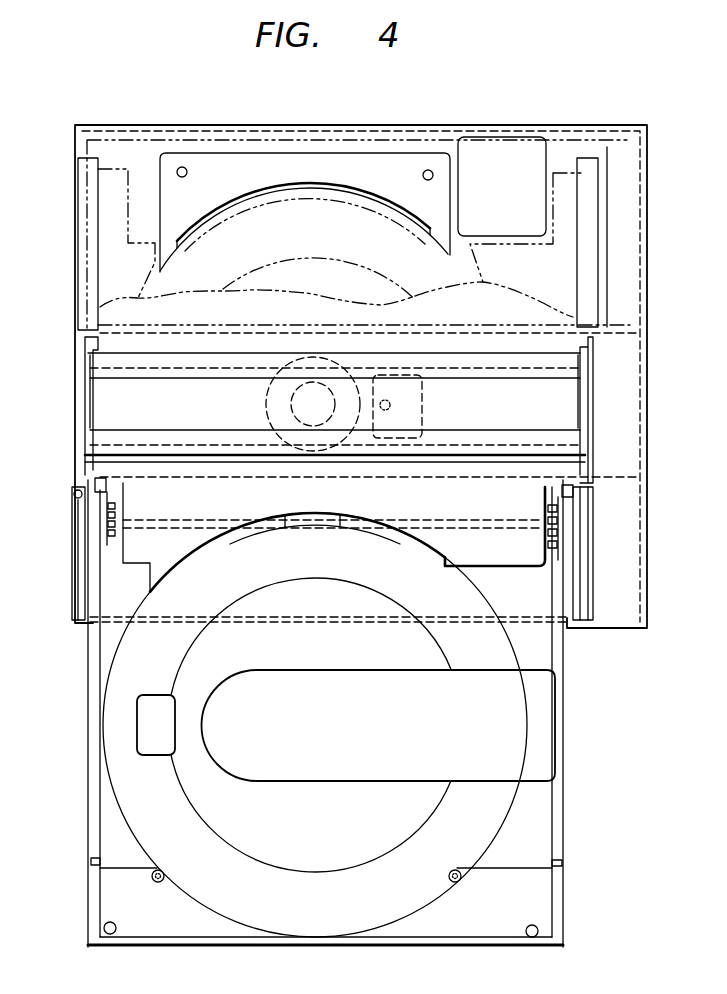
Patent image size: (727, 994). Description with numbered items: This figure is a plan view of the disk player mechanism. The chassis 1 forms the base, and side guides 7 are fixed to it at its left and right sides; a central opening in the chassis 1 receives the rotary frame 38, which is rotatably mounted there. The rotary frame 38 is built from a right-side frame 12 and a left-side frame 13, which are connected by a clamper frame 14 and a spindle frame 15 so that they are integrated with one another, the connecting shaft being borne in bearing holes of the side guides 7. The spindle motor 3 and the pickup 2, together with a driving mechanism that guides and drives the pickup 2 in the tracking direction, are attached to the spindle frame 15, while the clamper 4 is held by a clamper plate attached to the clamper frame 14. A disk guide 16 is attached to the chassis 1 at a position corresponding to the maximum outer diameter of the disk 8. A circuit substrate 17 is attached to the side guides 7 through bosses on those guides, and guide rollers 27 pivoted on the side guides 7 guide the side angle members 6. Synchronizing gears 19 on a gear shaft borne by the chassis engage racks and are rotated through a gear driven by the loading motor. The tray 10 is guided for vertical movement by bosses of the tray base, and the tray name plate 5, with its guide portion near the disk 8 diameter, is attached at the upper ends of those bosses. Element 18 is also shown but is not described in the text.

The chassis 1 is at (169, 126).
The pickup 2 is at (422, 412).
The spindle motor 3 is at (313, 404).
The clamper 4 is at (282, 404).
The tray name plate 5 is at (528, 913).
The side angle members 6 is at (95, 784).
The side guides 7 is at (83, 458).
The disk 8 is at (457, 270).
The tray 10 is at (540, 813).
The right-side frame 12 is at (582, 348).
The left-side frame 13 is at (85, 345).
The clamper frame 14 is at (335, 381).
The spindle frame 15 is at (335, 458).
The disk guide 16 is at (348, 165).
The circuit substrate 17 is at (243, 146).
The connector block 18 is at (512, 158).
The synchronizing gears 19 is at (491, 521).
The guide rollers 27 is at (562, 495).
The rotary frame 38 is at (560, 420).